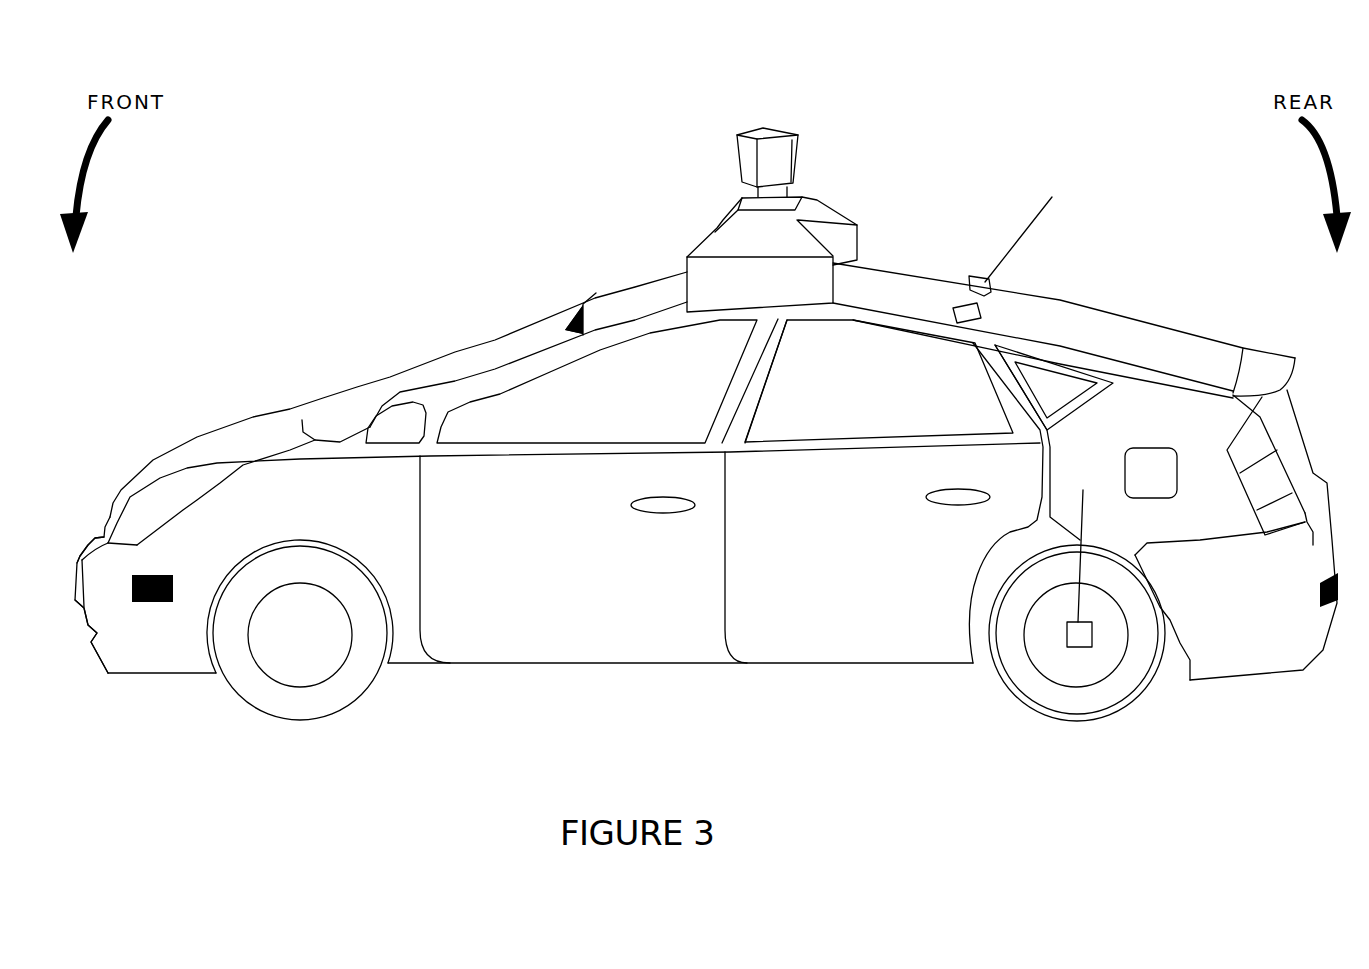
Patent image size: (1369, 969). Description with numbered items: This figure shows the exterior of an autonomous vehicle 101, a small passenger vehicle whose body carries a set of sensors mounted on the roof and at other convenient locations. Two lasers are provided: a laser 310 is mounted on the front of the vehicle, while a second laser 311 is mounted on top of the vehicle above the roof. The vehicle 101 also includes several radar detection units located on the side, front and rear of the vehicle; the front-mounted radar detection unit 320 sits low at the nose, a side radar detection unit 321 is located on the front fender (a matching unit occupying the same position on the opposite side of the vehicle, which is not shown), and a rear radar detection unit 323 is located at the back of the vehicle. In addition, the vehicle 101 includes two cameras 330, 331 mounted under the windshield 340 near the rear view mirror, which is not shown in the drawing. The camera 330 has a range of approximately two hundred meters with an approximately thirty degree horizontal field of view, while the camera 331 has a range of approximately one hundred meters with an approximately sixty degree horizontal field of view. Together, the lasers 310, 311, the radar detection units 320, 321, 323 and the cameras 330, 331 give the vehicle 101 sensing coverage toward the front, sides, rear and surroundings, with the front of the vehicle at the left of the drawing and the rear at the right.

The vehicle 101 is at (366, 75).
The laser 310 is at (77, 560).
The laser 311 is at (743, 150).
The radar detection unit 320 is at (87, 620).
The radar detection unit 321 is at (150, 607).
The radar detection unit 323 is at (1336, 610).
The camera 330 is at (572, 318).
The camera 331 is at (572, 318).
The windshield 340 is at (488, 357).